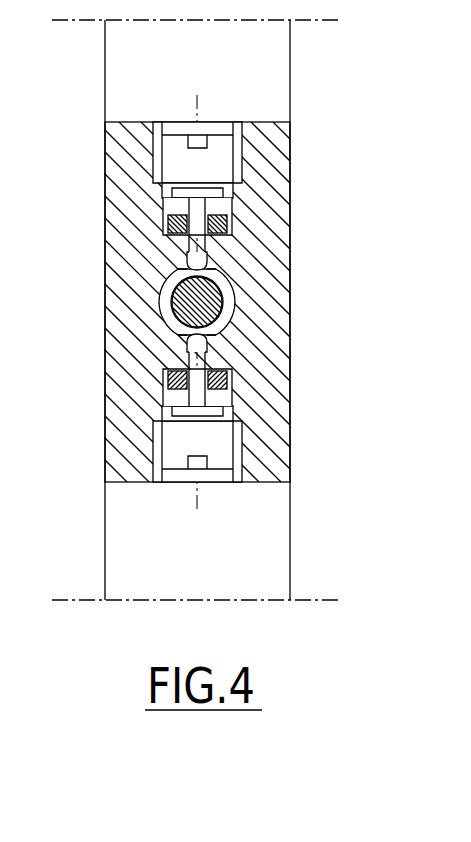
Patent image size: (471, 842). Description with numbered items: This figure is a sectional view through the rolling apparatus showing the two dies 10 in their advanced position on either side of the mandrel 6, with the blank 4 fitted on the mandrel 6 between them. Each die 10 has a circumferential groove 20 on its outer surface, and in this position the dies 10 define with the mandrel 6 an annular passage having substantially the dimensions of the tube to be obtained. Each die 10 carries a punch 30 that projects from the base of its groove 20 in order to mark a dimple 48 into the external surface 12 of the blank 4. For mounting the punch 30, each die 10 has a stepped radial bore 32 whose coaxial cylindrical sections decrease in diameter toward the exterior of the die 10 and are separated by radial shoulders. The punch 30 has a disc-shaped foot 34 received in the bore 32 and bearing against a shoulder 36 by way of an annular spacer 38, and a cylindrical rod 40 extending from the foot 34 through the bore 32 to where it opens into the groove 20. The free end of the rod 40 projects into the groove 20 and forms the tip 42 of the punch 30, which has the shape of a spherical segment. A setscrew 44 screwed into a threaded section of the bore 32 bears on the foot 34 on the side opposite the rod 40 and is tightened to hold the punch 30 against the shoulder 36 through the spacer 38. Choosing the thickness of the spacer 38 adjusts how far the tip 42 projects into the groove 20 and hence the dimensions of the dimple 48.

The die 10 is at (302, 147).
The bore 32 is at (183, 128).
The setscrew 44 is at (222, 148).
The foot 34 is at (217, 205).
The rod 40 is at (162, 195).
The shoulder 36 is at (184, 216).
The spacer 38 is at (229, 223).
The punch 30 is at (214, 250).
The groove 20 is at (173, 286).
The dimple 48 is at (187, 262).
The tip 42 is at (211, 264).
The mandrel 6 is at (236, 279).
The external surface 12 is at (226, 289).
The blank 4 is at (166, 300).